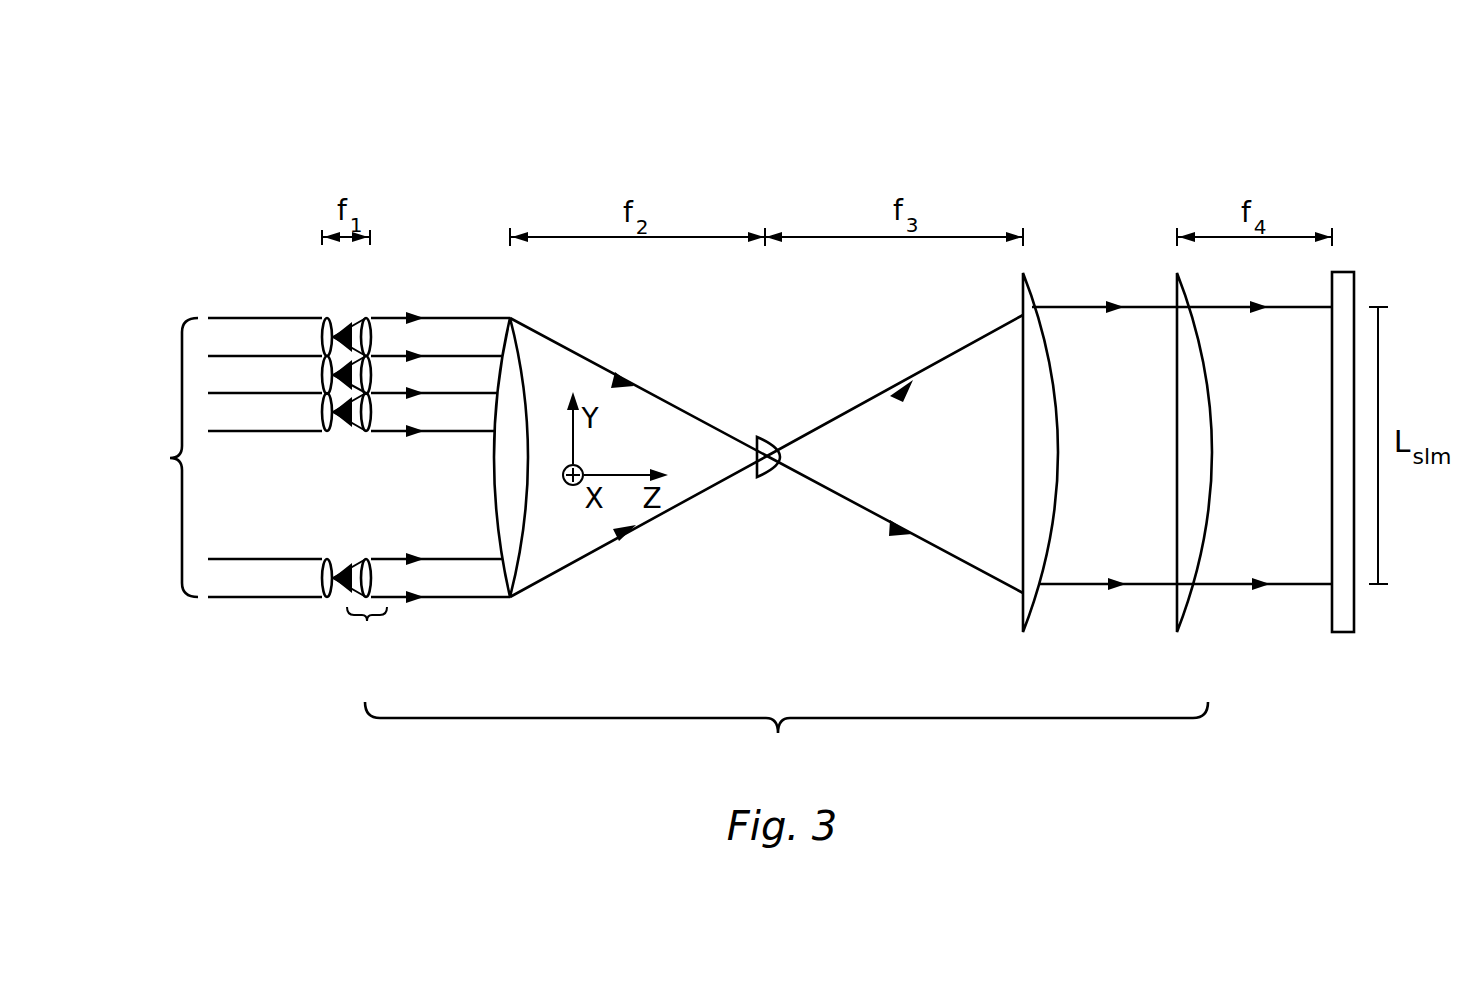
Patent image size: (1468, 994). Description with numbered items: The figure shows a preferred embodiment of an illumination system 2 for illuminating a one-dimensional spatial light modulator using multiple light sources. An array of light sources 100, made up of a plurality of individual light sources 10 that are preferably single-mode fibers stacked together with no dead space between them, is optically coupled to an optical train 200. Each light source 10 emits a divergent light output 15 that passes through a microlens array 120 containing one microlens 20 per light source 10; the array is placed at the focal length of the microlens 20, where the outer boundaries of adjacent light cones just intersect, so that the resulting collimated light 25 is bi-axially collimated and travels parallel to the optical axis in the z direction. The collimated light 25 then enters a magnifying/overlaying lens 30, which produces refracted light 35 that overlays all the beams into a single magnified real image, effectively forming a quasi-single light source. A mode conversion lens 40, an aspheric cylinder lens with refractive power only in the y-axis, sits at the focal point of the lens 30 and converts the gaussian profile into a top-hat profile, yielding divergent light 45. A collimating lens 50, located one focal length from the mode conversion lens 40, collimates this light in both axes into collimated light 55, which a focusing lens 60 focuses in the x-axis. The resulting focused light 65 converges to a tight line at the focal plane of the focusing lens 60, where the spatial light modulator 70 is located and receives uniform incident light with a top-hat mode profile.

The illumination system 2 is at (320, 733).
The light source 10 is at (247, 333).
The light output 15 is at (337, 330).
The microlens 20 is at (367, 318).
The collimated light 25 is at (453, 318).
The magnifying/overlaying lens 30 is at (510, 318).
The refracted light 35 is at (668, 403).
The mode conversion lens 40 is at (760, 436).
The divergent light 45 is at (915, 373).
The collimating lens 50 is at (1028, 302).
The collimated light 55 is at (1130, 305).
The focusing lens 60 is at (1181, 300).
The focused light 65 is at (1283, 305).
The spatial light modulator 70 is at (1342, 272).
The array of light sources 100 is at (156, 457).
The microlens array 120 is at (365, 635).
The optical train 200 is at (786, 735).